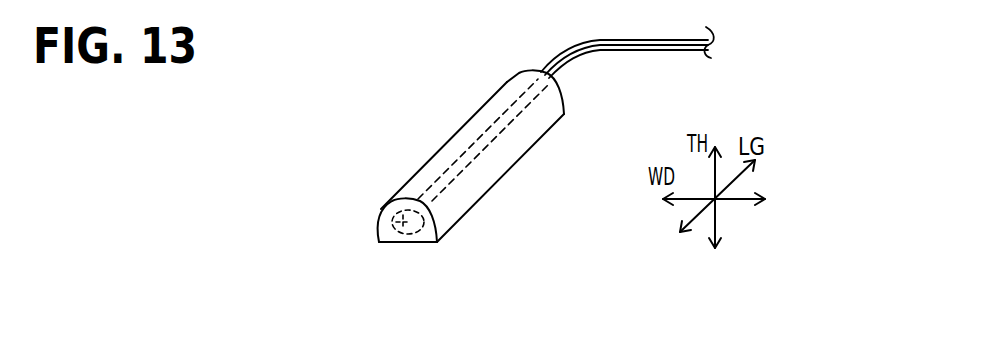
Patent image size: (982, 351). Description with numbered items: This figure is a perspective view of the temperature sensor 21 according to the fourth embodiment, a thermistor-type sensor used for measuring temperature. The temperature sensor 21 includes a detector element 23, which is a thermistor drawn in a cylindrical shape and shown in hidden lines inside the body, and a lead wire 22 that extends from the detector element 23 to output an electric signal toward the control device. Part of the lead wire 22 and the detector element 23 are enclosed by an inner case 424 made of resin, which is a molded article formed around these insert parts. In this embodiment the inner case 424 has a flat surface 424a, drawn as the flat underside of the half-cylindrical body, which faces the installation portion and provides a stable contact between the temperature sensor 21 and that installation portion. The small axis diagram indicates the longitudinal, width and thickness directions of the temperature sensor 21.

The temperature sensor 21 is at (496, 130).
The lead wire 22 is at (602, 41).
The detector element 23 is at (392, 222).
The inner case 424 is at (490, 101).
The flat surface 424a is at (405, 244).